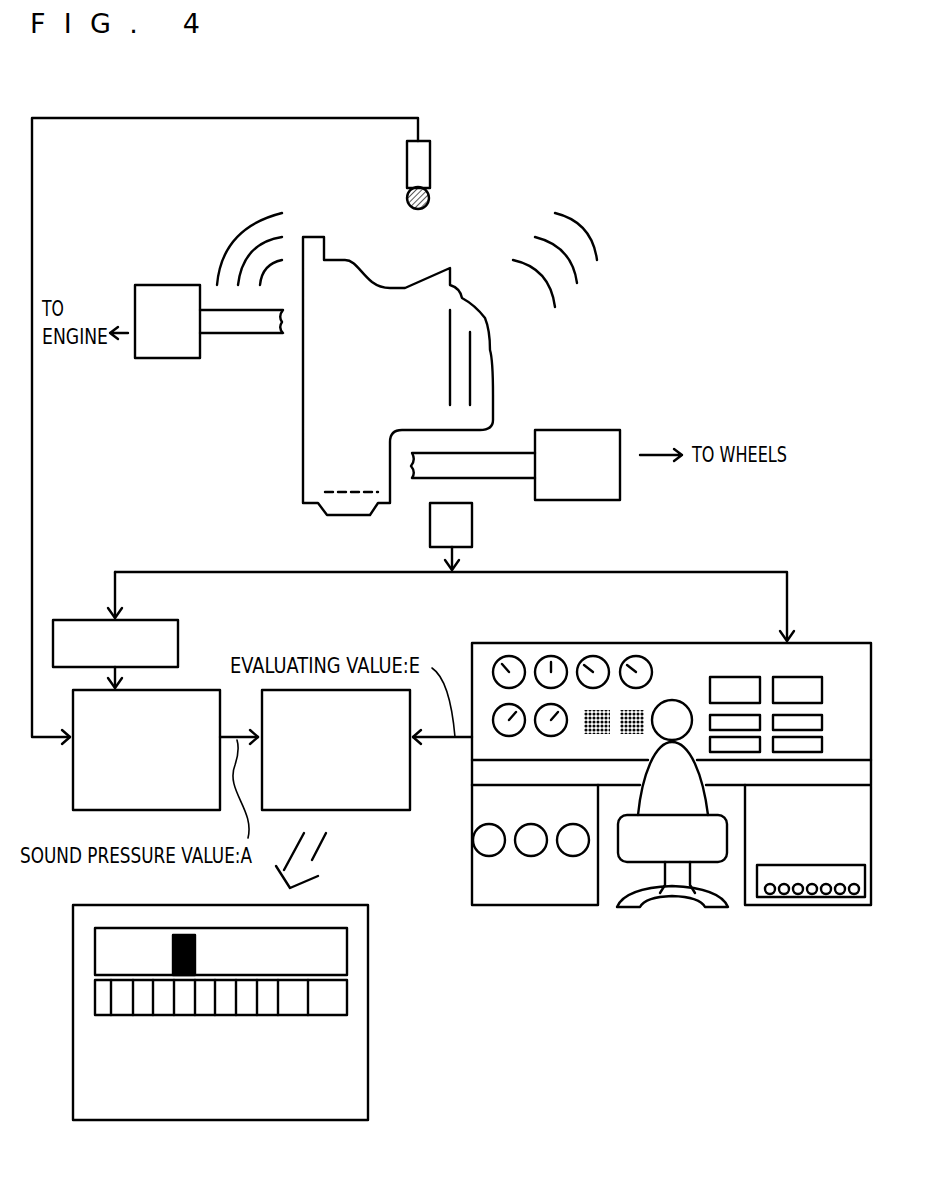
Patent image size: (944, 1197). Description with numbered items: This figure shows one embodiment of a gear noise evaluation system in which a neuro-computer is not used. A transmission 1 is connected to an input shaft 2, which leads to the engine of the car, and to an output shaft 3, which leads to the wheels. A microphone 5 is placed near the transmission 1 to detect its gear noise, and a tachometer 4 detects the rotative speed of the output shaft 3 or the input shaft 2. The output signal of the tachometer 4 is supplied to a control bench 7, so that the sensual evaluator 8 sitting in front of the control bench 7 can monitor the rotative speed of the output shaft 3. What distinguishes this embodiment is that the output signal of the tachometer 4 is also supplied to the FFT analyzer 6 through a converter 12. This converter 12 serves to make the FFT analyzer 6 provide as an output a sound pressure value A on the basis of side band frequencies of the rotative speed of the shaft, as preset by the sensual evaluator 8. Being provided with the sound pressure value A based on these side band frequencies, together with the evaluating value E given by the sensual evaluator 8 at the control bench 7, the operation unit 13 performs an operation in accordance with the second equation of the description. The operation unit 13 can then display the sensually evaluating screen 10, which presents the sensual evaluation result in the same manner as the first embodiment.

The transmission 1 is at (408, 285).
The input shaft 2 is at (185, 264).
The output shaft 3 is at (555, 430).
The tachometer 4 is at (472, 525).
The microphone 5 is at (430, 170).
The FFT analyzer 6 is at (155, 810).
The control bench 7 is at (492, 643).
The sensual evaluator 8 is at (672, 900).
The sensually evaluating screen 10 is at (197, 1120).
The converter 12 is at (155, 620).
The operation unit 13 is at (345, 810).